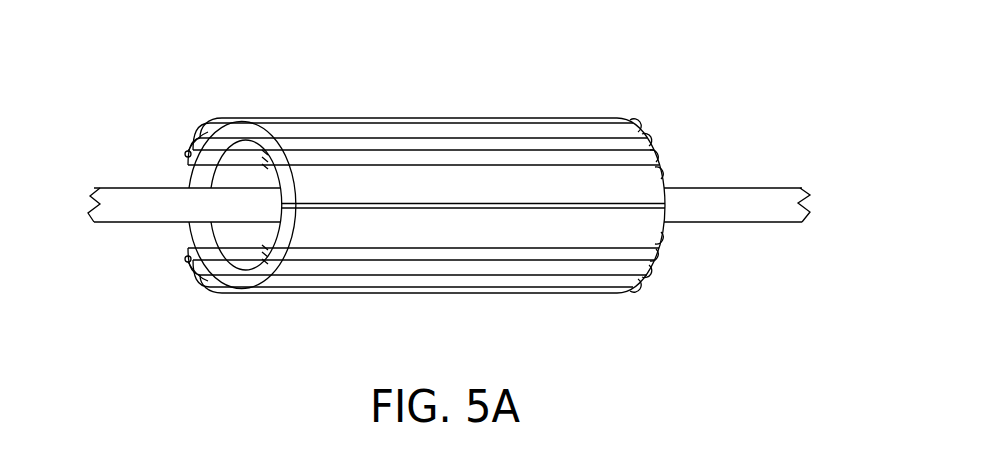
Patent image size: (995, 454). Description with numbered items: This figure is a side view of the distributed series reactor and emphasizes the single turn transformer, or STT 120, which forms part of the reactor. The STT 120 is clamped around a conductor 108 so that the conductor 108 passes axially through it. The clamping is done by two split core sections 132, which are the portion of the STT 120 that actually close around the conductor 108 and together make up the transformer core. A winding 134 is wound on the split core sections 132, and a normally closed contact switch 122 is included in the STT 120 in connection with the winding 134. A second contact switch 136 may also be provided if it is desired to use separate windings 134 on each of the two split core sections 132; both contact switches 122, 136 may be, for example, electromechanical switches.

The STT 120 is at (382, 84).
The split core sections 132 is at (531, 198).
The winding 134 is at (632, 117).
The normally closed contact switch 122 is at (187, 155).
The second contact switch 136 is at (187, 258).
The conductor 108 is at (732, 222).